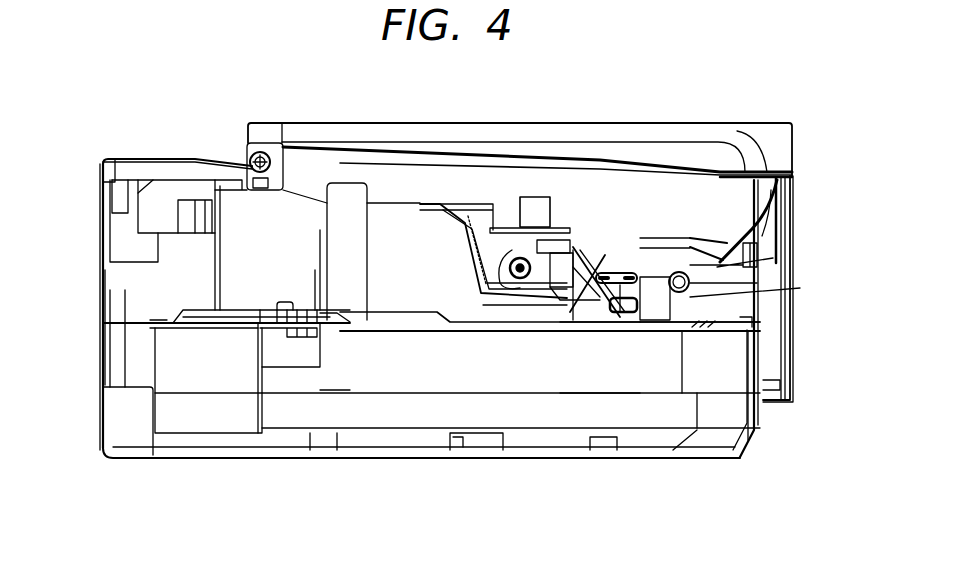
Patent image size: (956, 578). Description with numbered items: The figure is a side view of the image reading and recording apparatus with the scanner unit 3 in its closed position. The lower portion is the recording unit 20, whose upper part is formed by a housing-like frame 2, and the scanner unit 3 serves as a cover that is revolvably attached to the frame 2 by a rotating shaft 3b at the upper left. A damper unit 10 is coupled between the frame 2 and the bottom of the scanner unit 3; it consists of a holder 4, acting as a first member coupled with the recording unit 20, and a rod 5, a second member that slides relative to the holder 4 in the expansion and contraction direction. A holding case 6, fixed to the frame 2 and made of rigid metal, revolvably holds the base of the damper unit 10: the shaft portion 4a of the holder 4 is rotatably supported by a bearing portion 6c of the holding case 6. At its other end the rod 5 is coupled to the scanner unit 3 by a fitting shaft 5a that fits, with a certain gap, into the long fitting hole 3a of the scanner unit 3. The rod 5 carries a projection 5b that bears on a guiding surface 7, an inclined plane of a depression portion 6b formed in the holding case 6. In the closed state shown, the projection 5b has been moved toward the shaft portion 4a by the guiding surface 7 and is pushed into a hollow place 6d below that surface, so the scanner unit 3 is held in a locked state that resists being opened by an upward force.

The frame 2 is at (440, 308).
The scanner unit 3 is at (572, 205).
The fitting hole 3a is at (517, 262).
The rotating shaft 3b is at (258, 150).
The holder 4 is at (632, 268).
The shaft portion 4a is at (773, 257).
The rod 5 is at (540, 262).
The fitting shaft 5a is at (520, 280).
The projection 5b is at (625, 318).
The holding case 6 is at (723, 304).
The depression portion 6b is at (648, 312).
The bearing portion 6c is at (693, 291).
The hollow place 6d is at (597, 312).
The guiding surface 7 is at (578, 395).
The damper unit 10 is at (608, 262).
The recording unit 20 is at (415, 370).